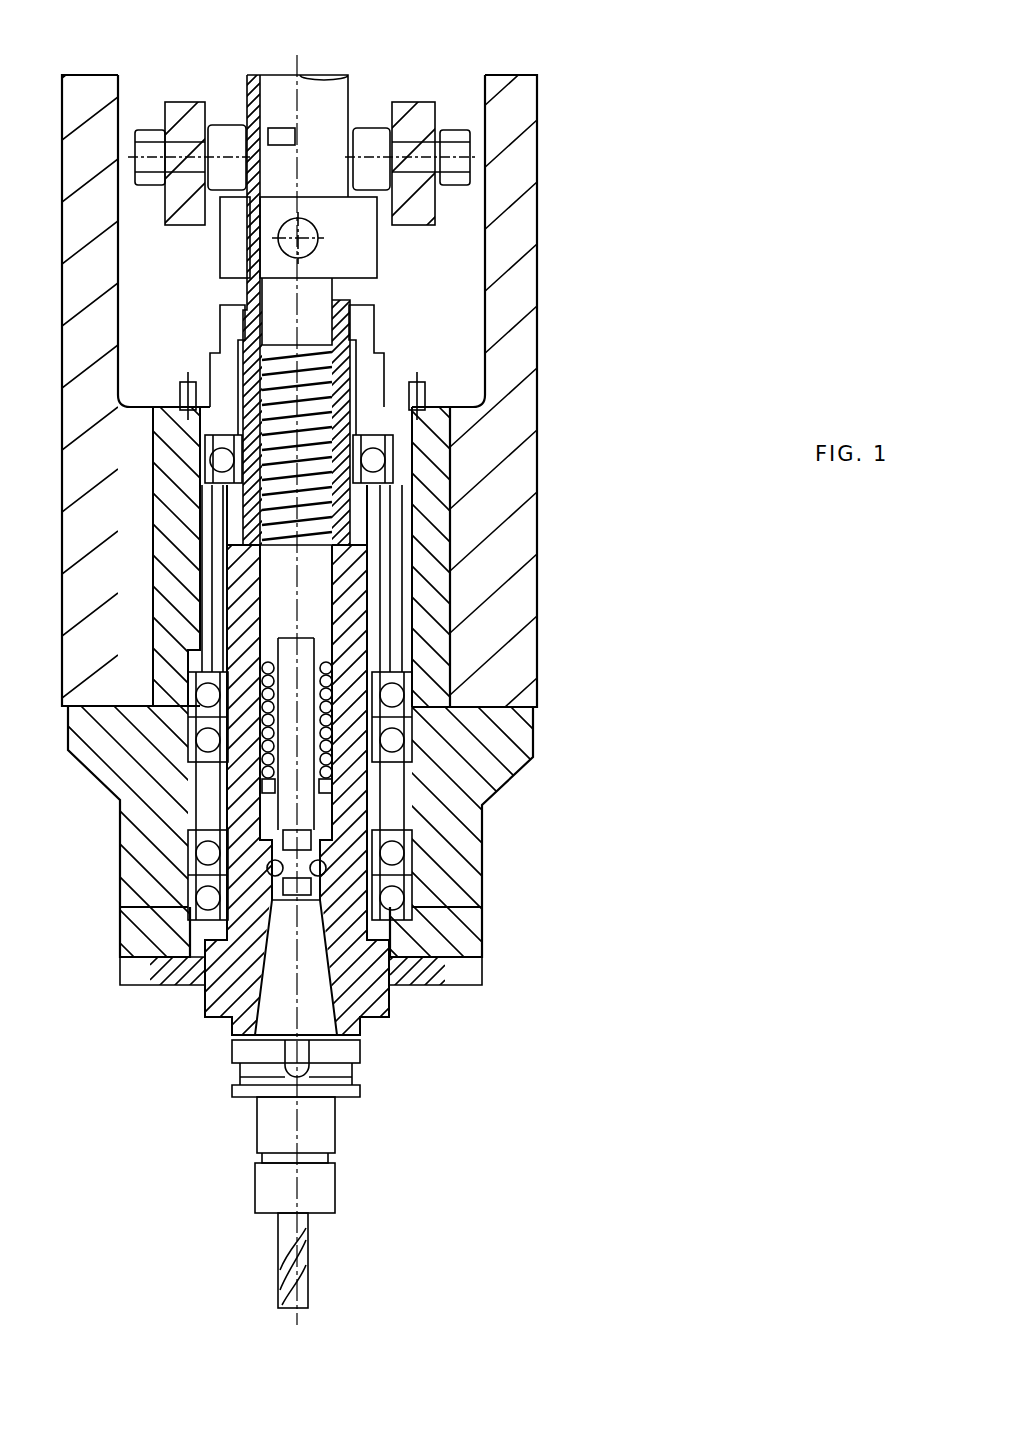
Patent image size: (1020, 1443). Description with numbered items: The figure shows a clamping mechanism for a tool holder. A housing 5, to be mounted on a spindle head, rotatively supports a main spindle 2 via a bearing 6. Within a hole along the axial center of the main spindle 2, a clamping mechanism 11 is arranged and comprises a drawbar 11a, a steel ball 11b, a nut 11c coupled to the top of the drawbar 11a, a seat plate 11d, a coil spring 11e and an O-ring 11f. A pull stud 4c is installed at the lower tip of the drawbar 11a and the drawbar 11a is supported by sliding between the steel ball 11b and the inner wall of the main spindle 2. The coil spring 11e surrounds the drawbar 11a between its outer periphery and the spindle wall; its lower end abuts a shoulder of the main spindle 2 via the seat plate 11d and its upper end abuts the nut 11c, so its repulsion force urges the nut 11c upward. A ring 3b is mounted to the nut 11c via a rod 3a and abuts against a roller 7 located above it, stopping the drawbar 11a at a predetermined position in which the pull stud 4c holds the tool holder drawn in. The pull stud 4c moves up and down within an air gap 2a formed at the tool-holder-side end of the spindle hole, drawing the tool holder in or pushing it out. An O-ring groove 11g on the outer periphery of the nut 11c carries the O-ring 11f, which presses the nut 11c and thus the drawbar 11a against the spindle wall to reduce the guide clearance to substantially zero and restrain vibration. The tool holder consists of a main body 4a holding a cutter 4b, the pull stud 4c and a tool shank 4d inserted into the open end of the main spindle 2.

The main spindle 2 is at (380, 987).
The air gap 2a is at (482, 957).
The rod 3a is at (310, 218).
The ring 3b is at (355, 240).
The main body of tool holder 4a is at (335, 1120).
The cutter 4b is at (310, 1285).
The pull stud 4c is at (335, 905).
The tool shank 4d is at (240, 1022).
The housing 5 is at (513, 722).
The bearing 6 is at (405, 768).
The roller 7 is at (372, 130).
The clamping mechanism 11 is at (636, 432).
The drawbar 11a is at (305, 588).
The steel ball 11b is at (330, 852).
The nut 11c is at (393, 333).
The seat plate 11d is at (423, 740).
The coil spring 11e is at (400, 452).
The O-ring 11f is at (305, 160).
The O-ring groove 11g is at (283, 138).